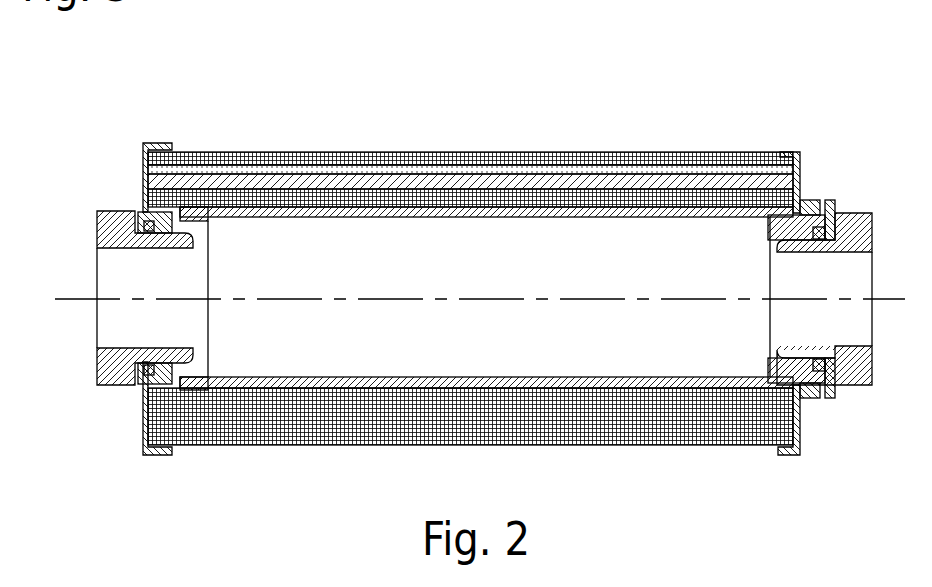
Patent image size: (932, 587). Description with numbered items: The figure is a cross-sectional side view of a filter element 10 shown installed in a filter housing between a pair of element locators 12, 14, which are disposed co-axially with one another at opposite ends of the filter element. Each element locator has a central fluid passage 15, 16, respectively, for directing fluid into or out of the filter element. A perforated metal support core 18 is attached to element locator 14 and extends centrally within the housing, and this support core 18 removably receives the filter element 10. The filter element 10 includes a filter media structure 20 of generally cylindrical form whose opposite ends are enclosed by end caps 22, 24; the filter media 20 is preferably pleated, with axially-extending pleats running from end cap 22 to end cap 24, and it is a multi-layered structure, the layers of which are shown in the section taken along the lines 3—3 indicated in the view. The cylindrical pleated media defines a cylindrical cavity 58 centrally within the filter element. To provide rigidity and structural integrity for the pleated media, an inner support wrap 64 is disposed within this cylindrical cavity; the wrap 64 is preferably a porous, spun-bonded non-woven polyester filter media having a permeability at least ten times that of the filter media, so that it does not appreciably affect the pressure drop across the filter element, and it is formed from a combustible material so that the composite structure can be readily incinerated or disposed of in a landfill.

The filter element 10 is at (550, 120).
The element locator 12 is at (113, 211).
The element locator 14 is at (850, 213).
The central fluid passage 15 is at (112, 324).
The central fluid passage 16 is at (856, 327).
The perforated metal support core 18 is at (303, 378).
The filter media structure 20 is at (296, 150).
The end cap 22 is at (142, 158).
The end cap 24 is at (800, 166).
The cylindrical cavity 58 is at (413, 345).
The inner support wrap 64 is at (598, 390).
The section line 3- 3 is at (475, 238).